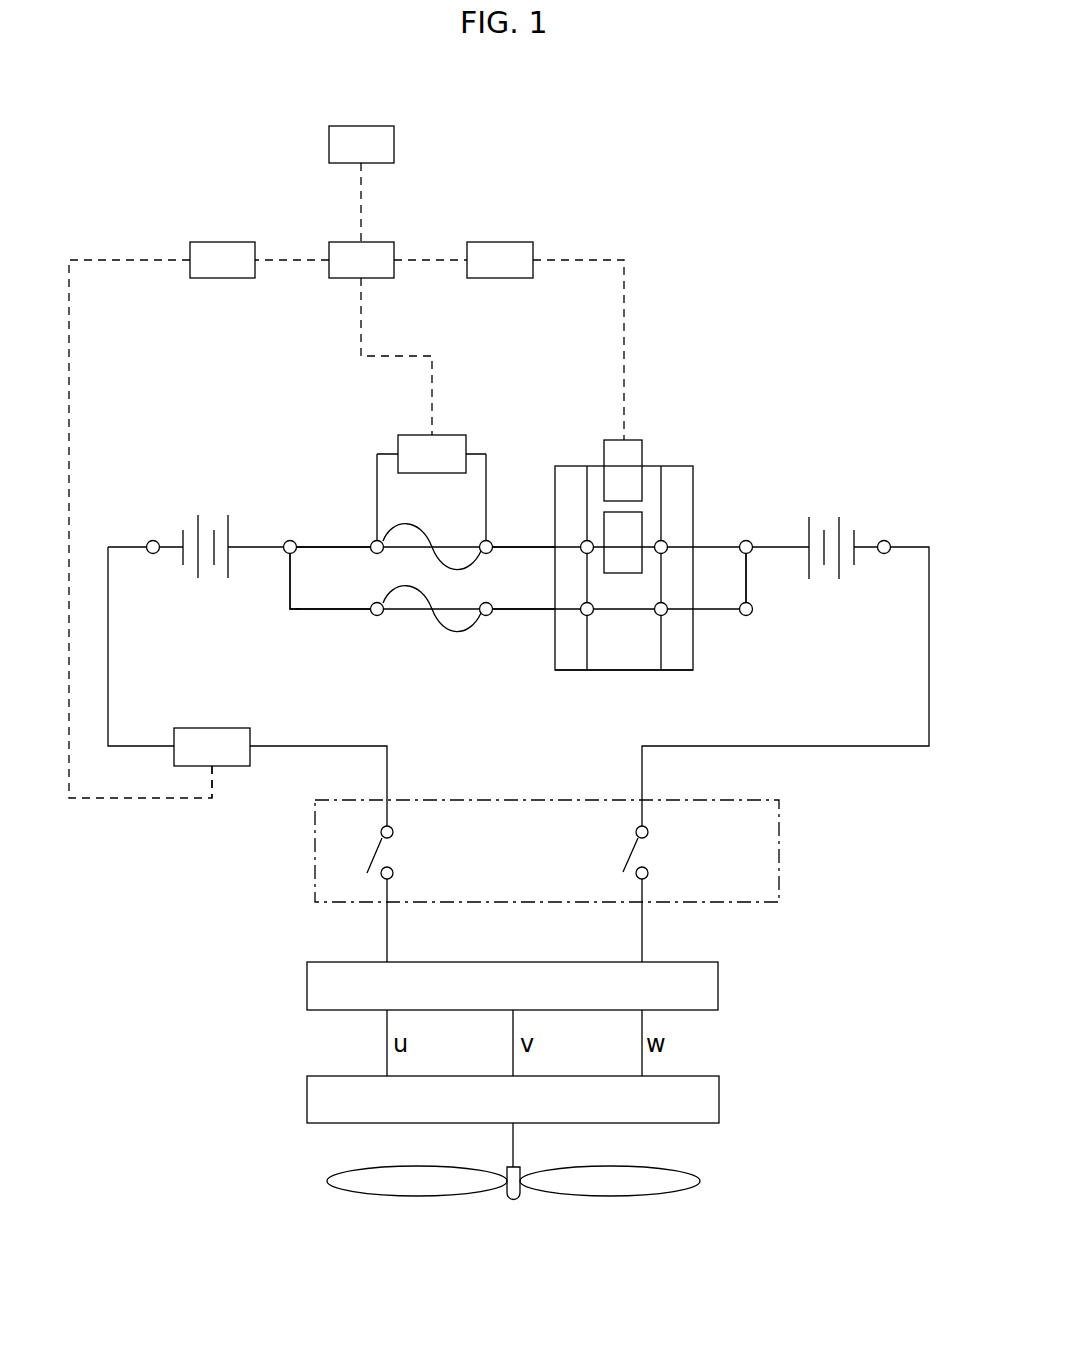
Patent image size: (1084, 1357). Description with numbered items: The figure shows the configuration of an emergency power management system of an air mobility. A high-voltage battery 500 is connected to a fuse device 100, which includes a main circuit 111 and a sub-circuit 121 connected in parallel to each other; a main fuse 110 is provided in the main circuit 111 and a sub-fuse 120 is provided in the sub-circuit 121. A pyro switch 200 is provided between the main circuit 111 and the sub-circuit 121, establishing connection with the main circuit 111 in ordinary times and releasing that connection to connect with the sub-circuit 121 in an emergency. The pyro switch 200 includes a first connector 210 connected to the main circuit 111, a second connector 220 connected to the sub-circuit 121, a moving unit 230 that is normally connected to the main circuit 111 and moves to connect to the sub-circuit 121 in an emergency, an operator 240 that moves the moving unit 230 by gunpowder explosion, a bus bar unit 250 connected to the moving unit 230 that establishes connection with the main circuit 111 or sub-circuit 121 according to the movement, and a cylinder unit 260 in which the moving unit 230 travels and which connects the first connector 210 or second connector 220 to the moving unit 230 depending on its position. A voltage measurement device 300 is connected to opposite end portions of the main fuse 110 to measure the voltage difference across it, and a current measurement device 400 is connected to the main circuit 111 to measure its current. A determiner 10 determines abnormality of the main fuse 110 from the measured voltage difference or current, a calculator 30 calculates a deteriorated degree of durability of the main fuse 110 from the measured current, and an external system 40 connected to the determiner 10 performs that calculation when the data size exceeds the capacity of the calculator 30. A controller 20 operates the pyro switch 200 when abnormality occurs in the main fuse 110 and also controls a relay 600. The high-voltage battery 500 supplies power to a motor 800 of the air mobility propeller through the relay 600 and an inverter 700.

The determiner 10 is at (361, 338).
The controller 20 is at (545, 341).
The calculator 30 is at (162, 520).
The external system 40 is at (361, 184).
The fuse device 100 is at (283, 603).
The main fuse 110 is at (400, 524).
The main circuit 111 is at (325, 546).
The sub-fuse 120 is at (433, 620).
The sub-circuit 121 is at (323, 610).
The pyro switch 200 is at (694, 460).
The first connector 210 is at (517, 543).
The second connector 220 is at (515, 611).
The moving unit 230 is at (620, 562).
The operator 240 is at (632, 447).
The bus bar unit 250 is at (715, 545).
The cylinder unit 260 is at (640, 642).
The voltage measurement device 300 is at (431, 491).
The current measurement device 400 is at (212, 763).
The high-voltage battery 500 is at (197, 506).
The relay 600 is at (779, 850).
The inverter 700 is at (718, 983).
The motor 800 is at (719, 1100).